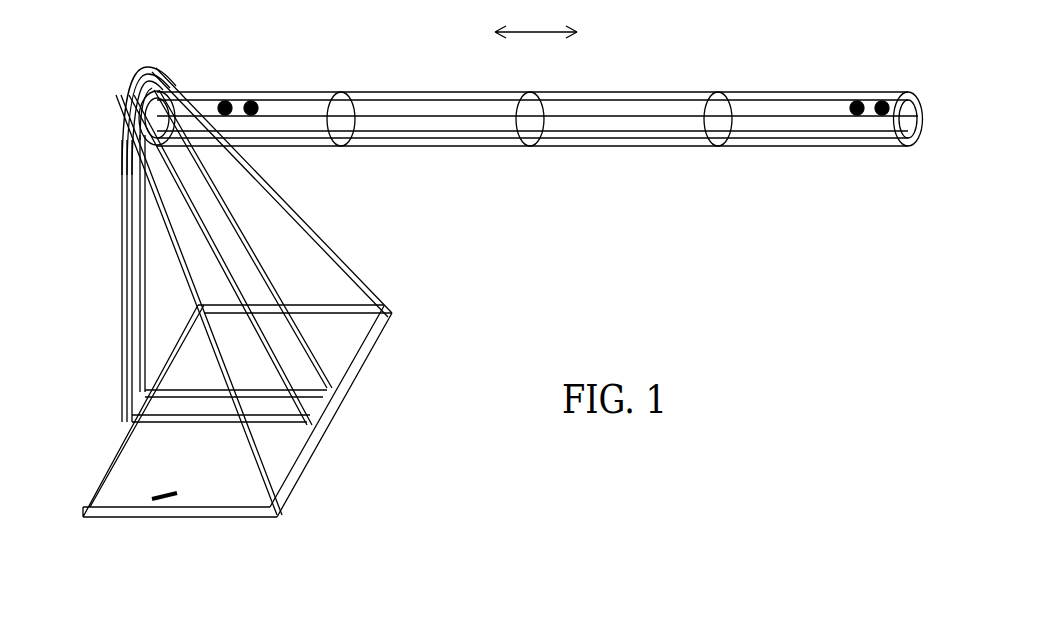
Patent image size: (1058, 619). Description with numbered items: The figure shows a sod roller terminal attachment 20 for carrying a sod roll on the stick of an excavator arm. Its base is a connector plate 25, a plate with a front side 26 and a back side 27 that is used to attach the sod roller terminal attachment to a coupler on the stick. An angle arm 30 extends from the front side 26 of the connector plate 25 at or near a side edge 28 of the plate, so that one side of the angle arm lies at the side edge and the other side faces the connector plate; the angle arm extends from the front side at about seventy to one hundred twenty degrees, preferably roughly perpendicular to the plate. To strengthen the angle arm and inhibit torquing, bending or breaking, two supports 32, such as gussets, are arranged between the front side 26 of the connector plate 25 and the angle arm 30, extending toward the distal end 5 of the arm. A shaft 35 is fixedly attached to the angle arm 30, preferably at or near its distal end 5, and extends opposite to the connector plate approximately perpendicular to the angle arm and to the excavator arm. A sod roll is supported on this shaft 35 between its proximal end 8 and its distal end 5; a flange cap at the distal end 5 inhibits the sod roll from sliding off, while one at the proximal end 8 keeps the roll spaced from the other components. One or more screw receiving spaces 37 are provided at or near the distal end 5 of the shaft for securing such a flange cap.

The sod roller terminal attachment 20 is at (484, 258).
The shaft 35 is at (640, 147).
The screw receiving spaces 37 is at (252, 101).
The proximal end 8 is at (520, 41).
The distal end 5 is at (589, 41).
The supports 32 is at (148, 298).
The angle arm 30 is at (313, 252).
The side edge 28 is at (353, 377).
The front side 26 is at (125, 432).
The connector plate 25 is at (100, 487).
The back side 27 is at (177, 495).